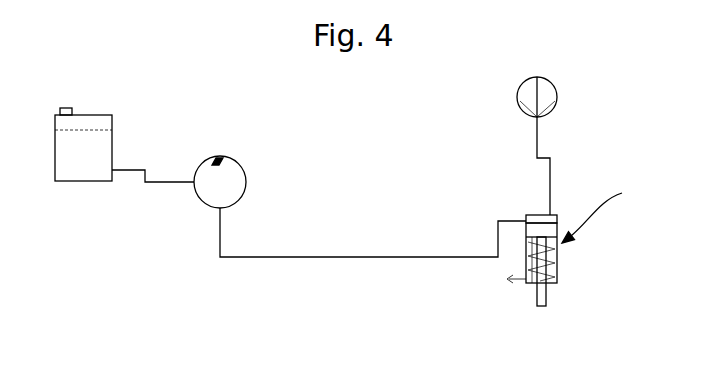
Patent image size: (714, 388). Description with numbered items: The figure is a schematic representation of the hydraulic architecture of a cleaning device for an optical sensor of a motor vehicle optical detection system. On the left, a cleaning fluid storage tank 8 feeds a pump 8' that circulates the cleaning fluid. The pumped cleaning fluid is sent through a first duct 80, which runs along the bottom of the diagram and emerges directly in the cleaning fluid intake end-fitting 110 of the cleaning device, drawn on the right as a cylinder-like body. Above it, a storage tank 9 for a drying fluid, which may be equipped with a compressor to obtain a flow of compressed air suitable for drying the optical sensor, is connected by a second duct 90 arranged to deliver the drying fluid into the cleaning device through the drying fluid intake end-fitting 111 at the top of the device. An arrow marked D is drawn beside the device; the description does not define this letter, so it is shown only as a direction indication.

The cleaning fluid storage tank 8 is at (83, 204).
The pump 8' is at (184, 135).
The first duct 80 is at (355, 257).
The storage tank 9 is at (518, 94).
The second duct 90 is at (535, 145).
The cleaning fluid intake end-fitting 110 is at (525, 217).
The drying fluid intake end-fitting 111 is at (552, 215).
The direction of movement D is at (602, 210).